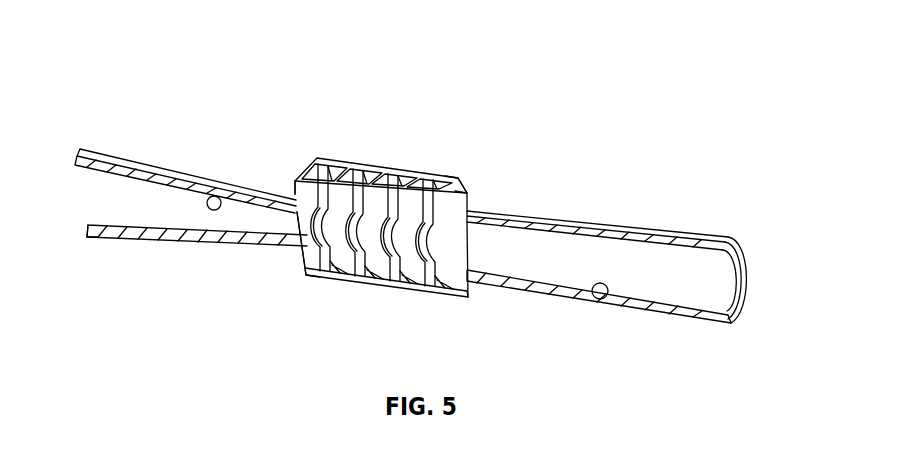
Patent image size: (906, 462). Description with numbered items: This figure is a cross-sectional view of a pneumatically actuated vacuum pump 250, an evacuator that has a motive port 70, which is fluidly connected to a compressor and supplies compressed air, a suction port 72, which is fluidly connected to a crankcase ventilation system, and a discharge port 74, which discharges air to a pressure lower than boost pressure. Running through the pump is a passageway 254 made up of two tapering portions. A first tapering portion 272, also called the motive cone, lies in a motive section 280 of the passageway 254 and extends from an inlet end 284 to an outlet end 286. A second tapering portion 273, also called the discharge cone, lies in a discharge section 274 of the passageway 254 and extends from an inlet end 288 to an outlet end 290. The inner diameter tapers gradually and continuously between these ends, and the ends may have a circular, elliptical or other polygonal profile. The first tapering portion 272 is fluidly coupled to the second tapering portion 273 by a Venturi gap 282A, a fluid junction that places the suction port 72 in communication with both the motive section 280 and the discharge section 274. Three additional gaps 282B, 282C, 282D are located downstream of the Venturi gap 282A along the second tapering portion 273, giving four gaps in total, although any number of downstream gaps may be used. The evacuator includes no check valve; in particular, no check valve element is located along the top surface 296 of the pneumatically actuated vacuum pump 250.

The pneumatically actuated vacuum pump 250 is at (158, 40).
The first tapering portion 272 is at (108, 200).
The motive section 280 is at (214, 196).
The motive port 70 is at (97, 190).
The passageway 254 is at (227, 224).
The inlet end 284 is at (90, 210).
The suction port 72 is at (374, 185).
The outlet end 286 is at (293, 192).
The inlet end 288 is at (306, 253).
The top surface 296 is at (459, 181).
The Venturi gap 282A is at (317, 162).
The additional gap 282B is at (354, 167).
The additional gap 282C is at (394, 172).
The additional gap 282D is at (431, 172).
The second tapering portion 273 is at (574, 252).
The discharge section 274 is at (601, 300).
The discharge port 74 is at (749, 263).
The outlet end 290 is at (746, 284).